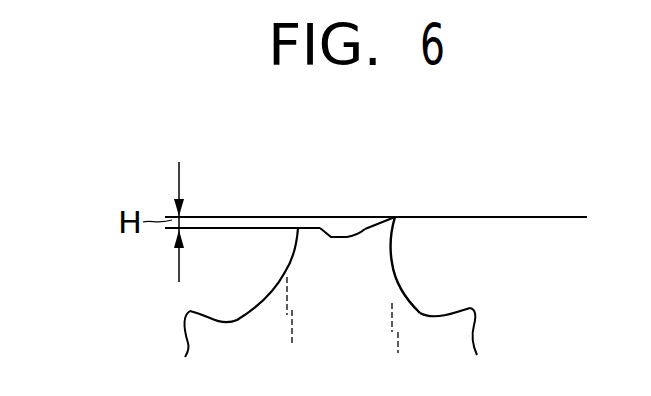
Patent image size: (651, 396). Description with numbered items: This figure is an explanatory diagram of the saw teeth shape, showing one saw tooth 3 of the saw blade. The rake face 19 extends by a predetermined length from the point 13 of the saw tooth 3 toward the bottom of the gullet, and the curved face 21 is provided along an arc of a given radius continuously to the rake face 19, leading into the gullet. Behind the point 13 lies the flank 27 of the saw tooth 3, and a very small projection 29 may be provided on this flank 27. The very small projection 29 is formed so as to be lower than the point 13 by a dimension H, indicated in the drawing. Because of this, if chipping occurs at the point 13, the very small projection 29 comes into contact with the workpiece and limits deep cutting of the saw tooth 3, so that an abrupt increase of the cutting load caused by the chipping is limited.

The saw tooth 3 is at (354, 317).
The point 13 is at (395, 217).
The rake face 19 is at (397, 272).
The curved face 21 is at (445, 313).
The flank 27 is at (357, 230).
The very small projection 29 is at (305, 228).